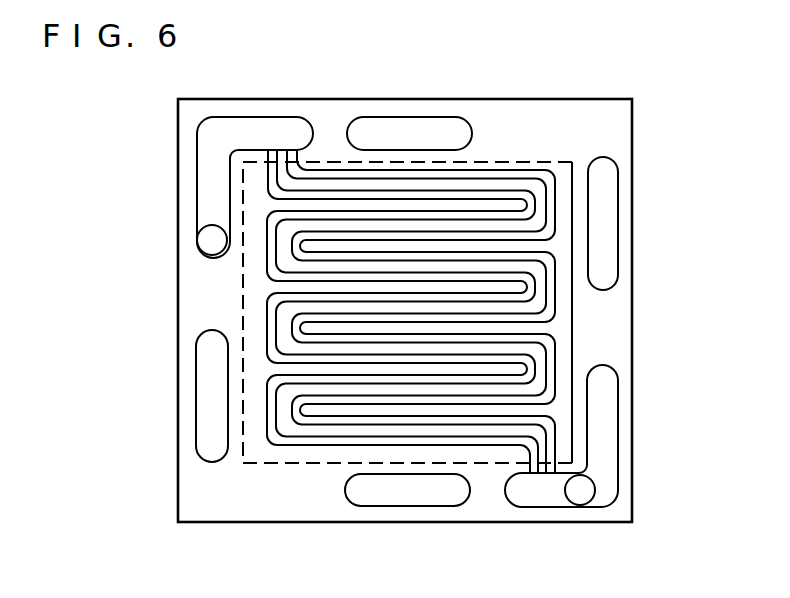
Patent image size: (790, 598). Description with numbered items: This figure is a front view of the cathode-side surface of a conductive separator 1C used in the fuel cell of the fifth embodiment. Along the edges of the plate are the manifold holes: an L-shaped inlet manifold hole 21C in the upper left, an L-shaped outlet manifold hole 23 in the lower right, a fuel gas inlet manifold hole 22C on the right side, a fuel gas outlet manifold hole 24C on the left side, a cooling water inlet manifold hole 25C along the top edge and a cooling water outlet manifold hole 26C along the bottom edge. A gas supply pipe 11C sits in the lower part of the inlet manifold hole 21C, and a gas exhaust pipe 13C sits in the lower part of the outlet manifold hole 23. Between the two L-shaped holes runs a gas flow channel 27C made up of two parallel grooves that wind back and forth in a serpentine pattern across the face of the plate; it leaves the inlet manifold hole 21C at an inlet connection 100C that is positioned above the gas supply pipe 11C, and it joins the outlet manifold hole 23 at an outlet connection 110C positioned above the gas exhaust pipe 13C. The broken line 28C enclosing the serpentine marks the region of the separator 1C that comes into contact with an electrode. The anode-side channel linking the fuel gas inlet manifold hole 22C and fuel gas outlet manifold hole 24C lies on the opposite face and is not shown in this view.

The separator 1C is at (598, 99).
The inlet manifold hole 21C is at (197, 147).
The gas supply pipe 11C is at (207, 240).
The cooling water inlet manifold hole 25C is at (418, 117).
The cooling water outlet manifold hole 26C is at (408, 506).
The fuel gas inlet manifold hole 22C is at (618, 197).
The fuel gas outlet manifold hole 24C is at (196, 398).
The outlet manifold hole 23 is at (618, 393).
The gas exhaust pipe 13C is at (580, 498).
The gas flow channel 27C is at (508, 163).
The broken line 28C is at (575, 328).
The inlet connection 100C is at (270, 148).
The outlet connection 110C is at (534, 478).